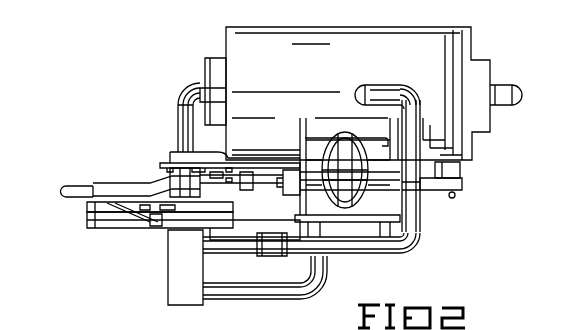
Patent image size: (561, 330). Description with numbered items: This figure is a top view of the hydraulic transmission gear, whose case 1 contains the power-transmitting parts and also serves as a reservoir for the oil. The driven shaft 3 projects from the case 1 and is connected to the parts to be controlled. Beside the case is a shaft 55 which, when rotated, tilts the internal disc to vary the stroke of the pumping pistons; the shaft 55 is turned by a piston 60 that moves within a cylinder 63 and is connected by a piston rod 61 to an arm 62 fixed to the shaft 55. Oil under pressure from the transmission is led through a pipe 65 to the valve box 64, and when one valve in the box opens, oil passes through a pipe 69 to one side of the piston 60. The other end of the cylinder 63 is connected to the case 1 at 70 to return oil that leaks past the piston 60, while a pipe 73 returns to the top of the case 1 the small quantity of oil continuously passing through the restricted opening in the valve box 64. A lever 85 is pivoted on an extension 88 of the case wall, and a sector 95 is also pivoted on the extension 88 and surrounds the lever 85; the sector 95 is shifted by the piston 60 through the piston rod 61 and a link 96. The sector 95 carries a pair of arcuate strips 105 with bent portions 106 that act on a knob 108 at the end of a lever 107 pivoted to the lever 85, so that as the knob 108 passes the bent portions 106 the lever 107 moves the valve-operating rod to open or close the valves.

The case 1 is at (470, 50).
The driven shaft 3 is at (510, 88).
The shaft 55 is at (448, 172).
The piston 60 is at (347, 222).
The piston rod 61 is at (434, 186).
The arm 62 is at (458, 181).
The cylinder 63 is at (398, 250).
The valve box 64 is at (178, 283).
The pipe 65 is at (188, 122).
The pipe 69 is at (272, 300).
The connection 70 is at (384, 144).
The pipe 73 is at (243, 252).
The lever 85 is at (64, 193).
The extension 88 is at (222, 157).
The sector 95 is at (118, 182).
The link 96 is at (233, 183).
The arcuate strips 105 is at (100, 222).
The bent portions 106 is at (118, 230).
The lever 107 is at (162, 227).
The knob 108 is at (153, 222).